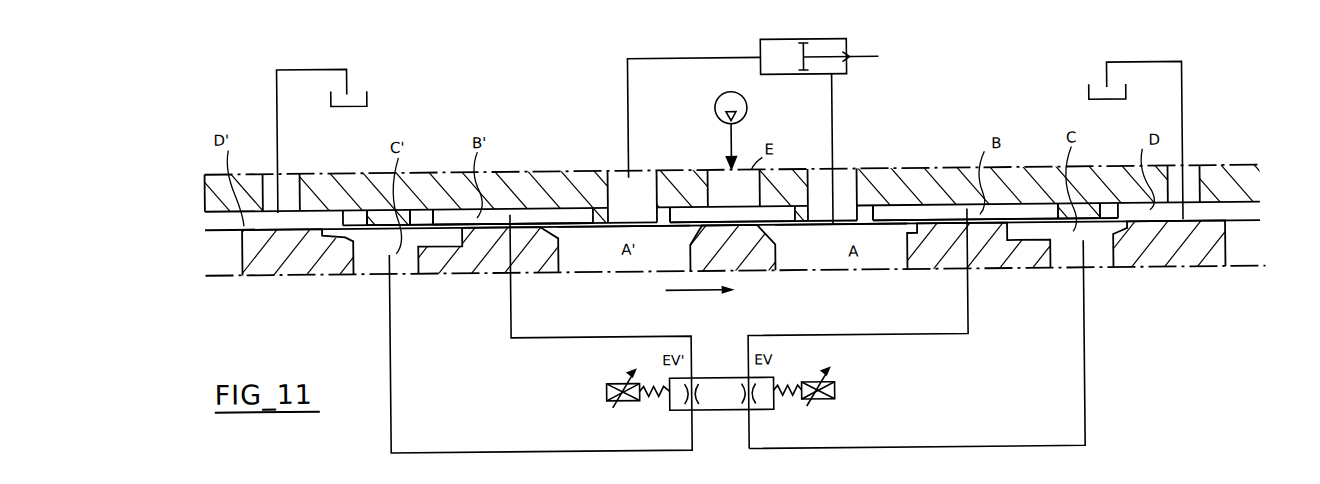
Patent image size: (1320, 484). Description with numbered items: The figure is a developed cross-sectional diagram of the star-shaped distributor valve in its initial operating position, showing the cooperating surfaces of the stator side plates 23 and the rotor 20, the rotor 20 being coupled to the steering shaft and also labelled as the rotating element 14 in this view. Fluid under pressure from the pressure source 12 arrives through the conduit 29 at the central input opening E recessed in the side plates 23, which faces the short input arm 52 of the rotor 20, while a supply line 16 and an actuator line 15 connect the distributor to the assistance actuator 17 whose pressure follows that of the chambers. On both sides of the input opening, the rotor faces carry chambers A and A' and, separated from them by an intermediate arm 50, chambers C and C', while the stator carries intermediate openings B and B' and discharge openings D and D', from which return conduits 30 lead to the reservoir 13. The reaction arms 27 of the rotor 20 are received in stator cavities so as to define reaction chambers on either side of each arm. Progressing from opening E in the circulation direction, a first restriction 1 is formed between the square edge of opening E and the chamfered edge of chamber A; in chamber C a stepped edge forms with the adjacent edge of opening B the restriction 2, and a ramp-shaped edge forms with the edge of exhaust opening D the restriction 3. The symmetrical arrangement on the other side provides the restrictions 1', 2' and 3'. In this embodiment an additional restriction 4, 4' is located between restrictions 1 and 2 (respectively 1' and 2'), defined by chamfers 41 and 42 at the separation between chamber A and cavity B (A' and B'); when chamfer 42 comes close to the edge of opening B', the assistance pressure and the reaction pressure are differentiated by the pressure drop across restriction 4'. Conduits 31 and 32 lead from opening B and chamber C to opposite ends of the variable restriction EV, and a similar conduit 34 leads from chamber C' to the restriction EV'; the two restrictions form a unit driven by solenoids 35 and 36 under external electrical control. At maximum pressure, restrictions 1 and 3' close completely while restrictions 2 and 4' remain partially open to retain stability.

The first restriction 1 is at (741, 231).
The first restriction of the symmetrical circuit 1' is at (672, 234).
The second restriction 2 is at (965, 177).
The second restriction of the symmetrical circuit 2' is at (501, 179).
The third restriction 3 is at (1086, 175).
The third restriction of the symmetrical circuit 3' is at (376, 180).
The additional restriction 4 is at (841, 261).
The additional restriction of the symmetrical circuit 4' is at (624, 261).
The pressure source 12 is at (719, 126).
The reservoir 13 is at (729, 141).
The rotor 14 is at (704, 264).
The cylinder line 15 is at (845, 148).
The line 16 is at (694, 117).
The hydraulic cylinder 17 is at (808, 52).
The rotor 20 is at (706, 264).
The side plates 23 is at (198, 191).
The reaction arms 27 is at (293, 262).
The conduit 29 is at (734, 187).
The return conduits 30 is at (291, 182).
The conduit 31 is at (870, 328).
The conduit 32 is at (929, 344).
The conduit 34 is at (540, 333).
The solenoid 35 is at (832, 386).
The solenoid 36 is at (620, 384).
The chamfer 41 is at (899, 226).
The chamfer 42 is at (557, 222).
The intermediate arm 50 is at (474, 262).
The input arm 52 is at (750, 254).